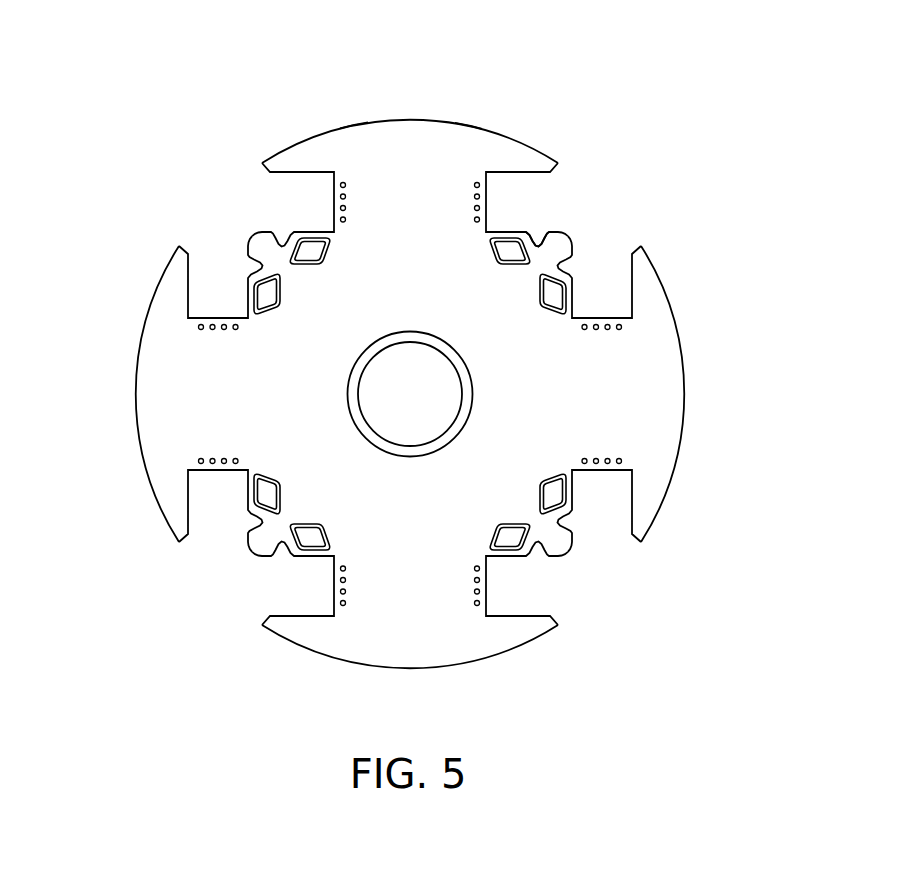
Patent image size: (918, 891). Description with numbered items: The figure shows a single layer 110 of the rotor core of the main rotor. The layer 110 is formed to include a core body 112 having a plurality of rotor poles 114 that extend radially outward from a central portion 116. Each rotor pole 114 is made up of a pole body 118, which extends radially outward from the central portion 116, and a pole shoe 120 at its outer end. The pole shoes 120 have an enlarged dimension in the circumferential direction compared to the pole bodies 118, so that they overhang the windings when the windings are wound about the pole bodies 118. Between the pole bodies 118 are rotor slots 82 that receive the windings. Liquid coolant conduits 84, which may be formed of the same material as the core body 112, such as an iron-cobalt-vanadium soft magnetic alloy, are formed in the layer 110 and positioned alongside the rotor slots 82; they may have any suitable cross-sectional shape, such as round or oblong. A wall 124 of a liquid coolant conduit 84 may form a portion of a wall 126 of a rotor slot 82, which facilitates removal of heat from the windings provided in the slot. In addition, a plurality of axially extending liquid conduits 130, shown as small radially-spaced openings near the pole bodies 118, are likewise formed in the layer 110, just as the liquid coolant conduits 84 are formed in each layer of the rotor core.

The rotor slot 82 is at (456, 160).
The liquid coolant conduit 84 is at (513, 264).
The layer 110 is at (410, 371).
The core body 112 is at (669, 392).
The rotor pole 114 is at (399, 116).
The central portion 116 is at (405, 300).
The pole body 118 is at (354, 141).
The pole shoe 120 is at (468, 124).
The wall of the liquid coolant conduit 124 is at (507, 235).
The wall of the rotor slot 126 is at (534, 229).
The axially extending liquid conduit 130 is at (475, 184).